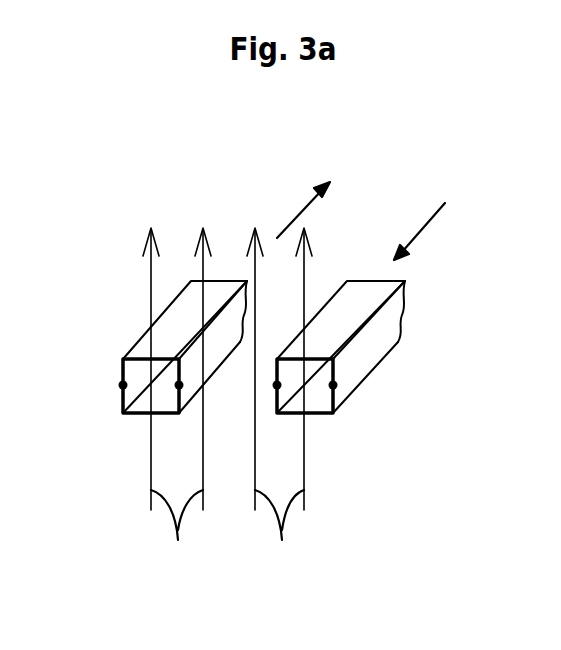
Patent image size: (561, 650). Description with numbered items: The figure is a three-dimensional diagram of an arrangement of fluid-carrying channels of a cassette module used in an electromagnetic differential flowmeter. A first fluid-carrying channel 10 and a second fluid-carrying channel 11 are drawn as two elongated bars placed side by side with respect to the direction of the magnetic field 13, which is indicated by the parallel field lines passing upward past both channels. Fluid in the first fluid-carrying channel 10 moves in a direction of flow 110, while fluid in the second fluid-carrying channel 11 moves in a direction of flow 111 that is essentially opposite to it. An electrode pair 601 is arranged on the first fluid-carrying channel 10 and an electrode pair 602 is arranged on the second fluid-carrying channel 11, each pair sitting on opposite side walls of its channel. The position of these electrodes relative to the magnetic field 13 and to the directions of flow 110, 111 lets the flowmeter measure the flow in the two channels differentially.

The first fluid-carrying channel 10 is at (142, 360).
The second fluid-carrying channel 11 is at (323, 415).
The magnetic field 13 is at (227, 403).
The direction of flow 110 is at (287, 222).
The direction of flow 111 is at (428, 223).
The electrode pair 601 is at (179, 387).
The electrode pair 602 is at (279, 384).